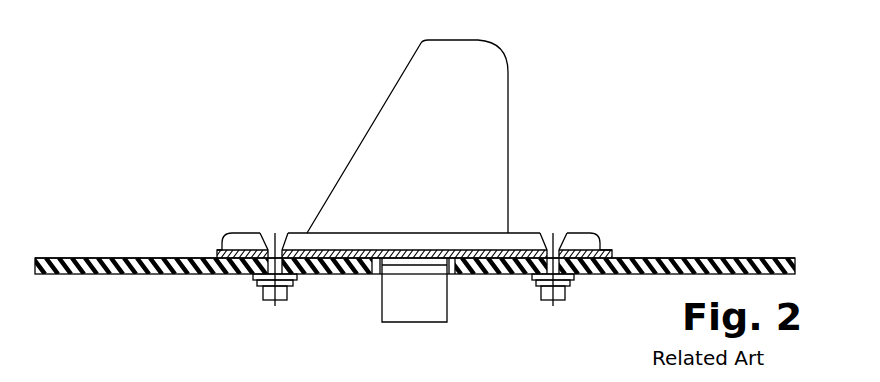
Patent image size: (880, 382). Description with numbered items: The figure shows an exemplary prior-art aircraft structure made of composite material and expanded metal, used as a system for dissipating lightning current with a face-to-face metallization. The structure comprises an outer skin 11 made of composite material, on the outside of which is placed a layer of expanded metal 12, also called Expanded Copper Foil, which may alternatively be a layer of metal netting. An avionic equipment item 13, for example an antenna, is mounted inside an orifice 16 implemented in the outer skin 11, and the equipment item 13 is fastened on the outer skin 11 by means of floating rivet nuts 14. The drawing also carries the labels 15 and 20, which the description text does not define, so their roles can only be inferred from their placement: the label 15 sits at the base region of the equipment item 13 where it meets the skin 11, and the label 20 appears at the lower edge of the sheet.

The outer skin 11 is at (127, 275).
The layer of expanded metal 12 is at (681, 257).
The avionic equipment item 13 is at (495, 113).
The floating rivet nuts 14 is at (553, 300).
The antenna base plate 15 is at (583, 250).
The orifice 16 is at (452, 275).
The antenna assembly 20 is at (86, 375).